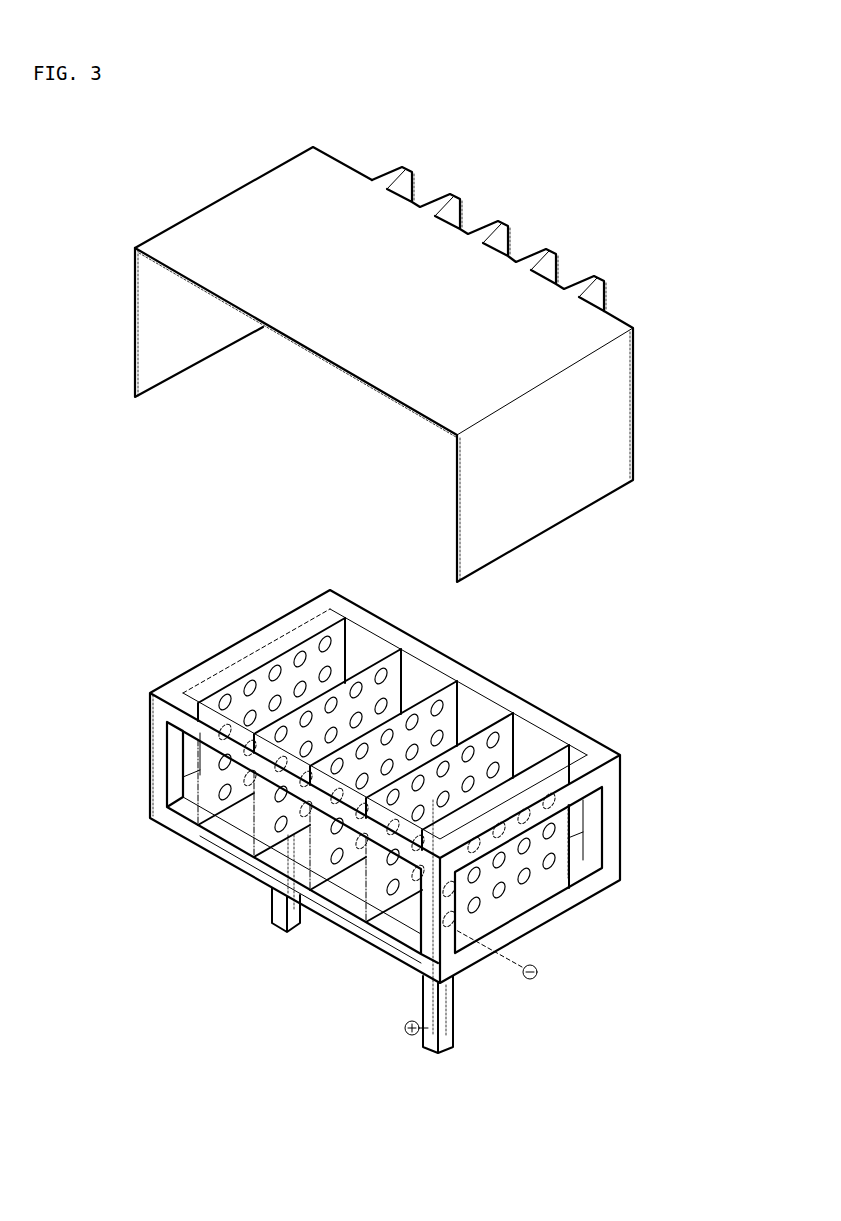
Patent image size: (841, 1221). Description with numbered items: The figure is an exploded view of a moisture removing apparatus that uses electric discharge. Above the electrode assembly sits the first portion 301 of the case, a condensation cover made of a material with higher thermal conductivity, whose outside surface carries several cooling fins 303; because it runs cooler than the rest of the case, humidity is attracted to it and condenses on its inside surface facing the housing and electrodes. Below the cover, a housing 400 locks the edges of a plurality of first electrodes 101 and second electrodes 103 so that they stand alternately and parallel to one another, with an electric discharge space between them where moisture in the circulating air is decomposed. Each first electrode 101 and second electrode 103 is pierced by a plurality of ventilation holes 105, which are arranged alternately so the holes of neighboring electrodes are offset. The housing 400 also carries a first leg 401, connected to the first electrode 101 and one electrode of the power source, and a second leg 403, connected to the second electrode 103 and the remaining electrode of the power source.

The first portion (condensation cover) 301 is at (610, 427).
The fin 303 is at (579, 297).
The housing 400 is at (158, 762).
The first leg 401 is at (447, 1027).
The second leg 403 is at (283, 932).
The first electrode 101 is at (393, 672).
The second electrode 103 is at (336, 640).
The ventilation holes 105 is at (481, 762).